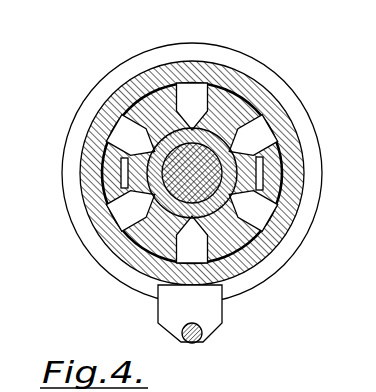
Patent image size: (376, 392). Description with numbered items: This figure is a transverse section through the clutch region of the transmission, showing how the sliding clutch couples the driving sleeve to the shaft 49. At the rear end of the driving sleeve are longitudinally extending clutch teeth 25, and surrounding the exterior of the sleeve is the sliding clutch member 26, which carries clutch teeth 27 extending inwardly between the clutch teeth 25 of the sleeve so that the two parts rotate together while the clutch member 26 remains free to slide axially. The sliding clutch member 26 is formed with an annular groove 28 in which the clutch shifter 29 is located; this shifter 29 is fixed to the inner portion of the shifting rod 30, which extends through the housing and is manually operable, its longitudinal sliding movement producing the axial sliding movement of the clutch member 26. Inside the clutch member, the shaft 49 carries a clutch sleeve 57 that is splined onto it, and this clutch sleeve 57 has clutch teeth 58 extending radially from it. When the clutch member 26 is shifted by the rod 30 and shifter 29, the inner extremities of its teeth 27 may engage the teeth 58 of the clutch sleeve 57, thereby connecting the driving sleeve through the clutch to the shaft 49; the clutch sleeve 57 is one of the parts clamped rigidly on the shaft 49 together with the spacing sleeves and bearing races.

The clutch teeth 25 is at (217, 92).
The sliding clutch member 26 is at (273, 236).
The clutch teeth 27 is at (245, 205).
The annular groove 28 is at (90, 233).
The clutch shifter 29 is at (207, 302).
The shifting rod 30 is at (201, 338).
The shaft 49 is at (120, 166).
The clutch sleeve 57 is at (148, 147).
The clutch teeth 58 is at (152, 153).